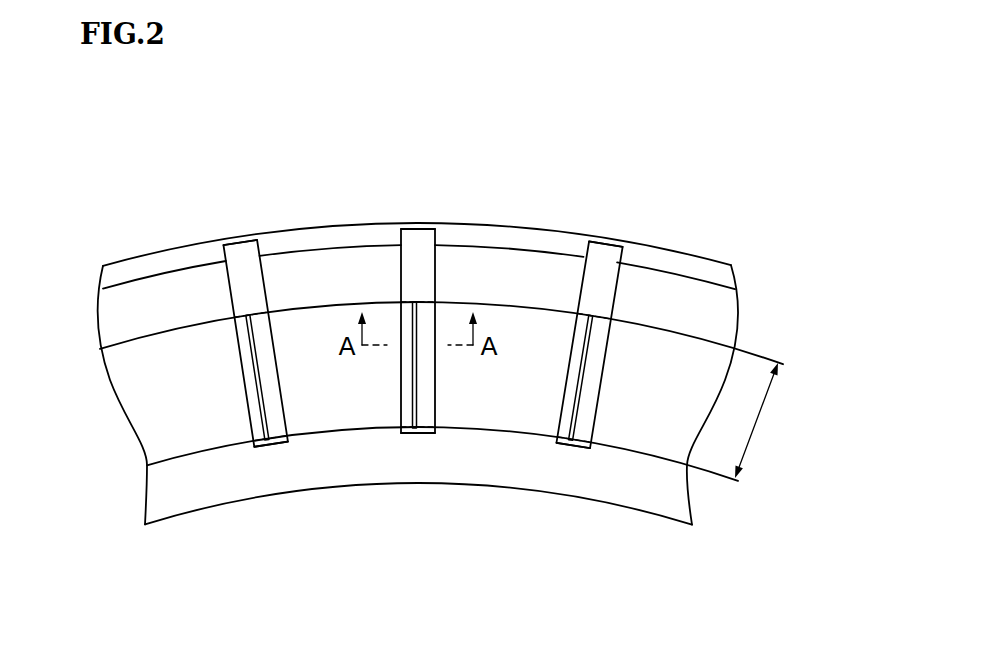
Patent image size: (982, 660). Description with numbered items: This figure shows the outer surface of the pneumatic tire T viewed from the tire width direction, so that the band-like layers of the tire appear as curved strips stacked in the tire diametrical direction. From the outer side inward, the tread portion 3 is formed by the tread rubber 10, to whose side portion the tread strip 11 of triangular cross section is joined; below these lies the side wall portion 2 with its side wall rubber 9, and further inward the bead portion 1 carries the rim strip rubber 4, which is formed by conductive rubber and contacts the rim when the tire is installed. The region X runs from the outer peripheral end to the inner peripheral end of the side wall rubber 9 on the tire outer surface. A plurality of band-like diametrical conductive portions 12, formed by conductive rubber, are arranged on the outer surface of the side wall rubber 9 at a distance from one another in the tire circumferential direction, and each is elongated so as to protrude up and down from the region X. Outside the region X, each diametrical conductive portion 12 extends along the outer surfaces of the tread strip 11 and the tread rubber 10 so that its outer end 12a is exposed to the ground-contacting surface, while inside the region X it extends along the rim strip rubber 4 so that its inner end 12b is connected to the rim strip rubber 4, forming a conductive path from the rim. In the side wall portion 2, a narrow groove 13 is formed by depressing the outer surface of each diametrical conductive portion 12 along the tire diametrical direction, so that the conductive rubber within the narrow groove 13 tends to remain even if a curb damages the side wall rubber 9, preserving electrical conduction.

The bead portion 1 is at (218, 528).
The side wall portion 2 is at (100, 400).
The tread portion 3 is at (163, 234).
The rim strip rubber 4 is at (333, 488).
The side wall rubber 9 is at (482, 418).
The tread rubber 10 is at (510, 237).
The tread strip 11 is at (643, 282).
The diametrical conductive portion 12 is at (236, 345).
The outer end 12a is at (238, 241).
The inner end 12b is at (264, 447).
The narrow groove 13 is at (257, 396).
The pneumatic tire T is at (702, 198).
The region X is at (756, 420).